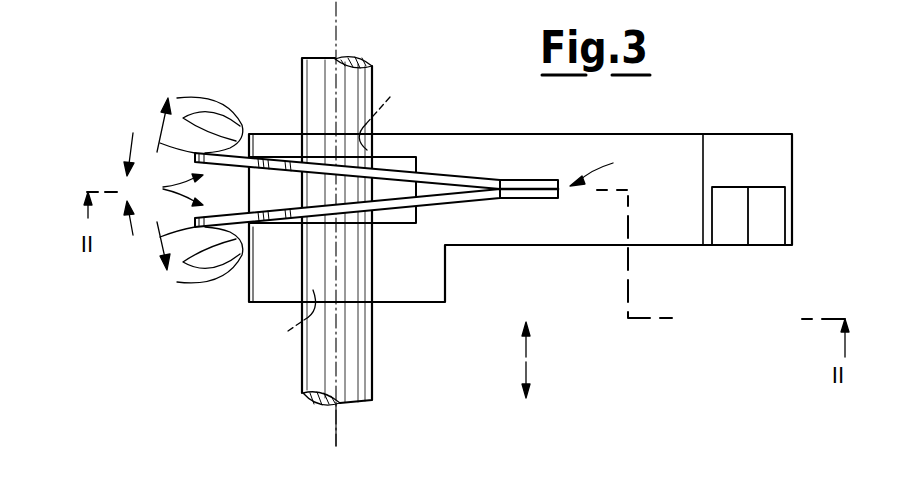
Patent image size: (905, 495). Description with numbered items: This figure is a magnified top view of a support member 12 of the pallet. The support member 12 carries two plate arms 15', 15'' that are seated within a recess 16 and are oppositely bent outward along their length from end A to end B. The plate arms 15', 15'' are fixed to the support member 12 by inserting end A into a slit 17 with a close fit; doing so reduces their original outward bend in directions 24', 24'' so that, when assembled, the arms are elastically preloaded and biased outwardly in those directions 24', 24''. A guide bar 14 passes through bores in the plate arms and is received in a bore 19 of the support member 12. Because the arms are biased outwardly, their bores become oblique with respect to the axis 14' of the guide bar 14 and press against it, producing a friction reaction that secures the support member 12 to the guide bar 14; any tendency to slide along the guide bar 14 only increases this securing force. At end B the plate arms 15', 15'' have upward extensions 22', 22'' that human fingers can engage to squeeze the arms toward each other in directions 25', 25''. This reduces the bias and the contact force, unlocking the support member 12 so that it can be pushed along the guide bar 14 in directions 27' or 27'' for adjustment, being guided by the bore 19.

The support member 12 is at (512, 233).
The guide bar 14 is at (301, 231).
The axis of the guide bar 14' is at (367, 426).
The plate arm 15' is at (347, 145).
The plate arm 15'' is at (347, 264).
The recess 16 is at (277, 188).
The slit 17 is at (506, 178).
The bore 19 is at (332, 211).
The upward extension 22' is at (201, 113).
The upward extension 22'' is at (201, 261).
The direction 24' is at (148, 112).
The direction 24'' is at (159, 270).
The direction 25' is at (108, 145).
The direction 25'' is at (120, 243).
The direction 27' is at (554, 339).
The direction 27'' is at (556, 380).
The end A is at (601, 166).
The end B is at (173, 190).